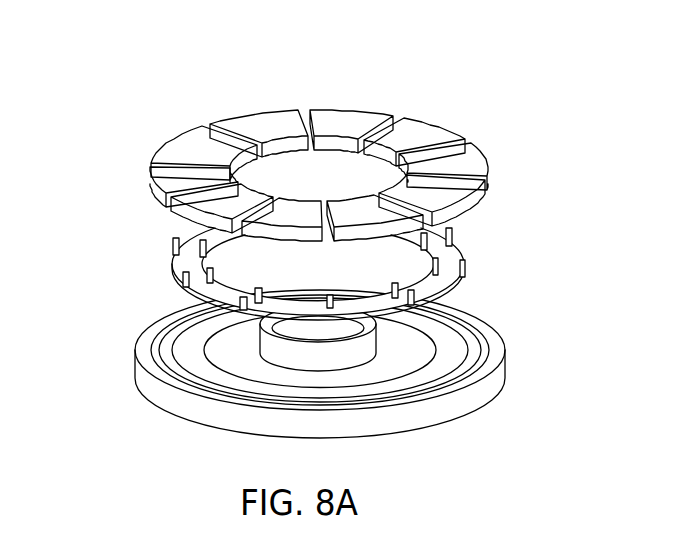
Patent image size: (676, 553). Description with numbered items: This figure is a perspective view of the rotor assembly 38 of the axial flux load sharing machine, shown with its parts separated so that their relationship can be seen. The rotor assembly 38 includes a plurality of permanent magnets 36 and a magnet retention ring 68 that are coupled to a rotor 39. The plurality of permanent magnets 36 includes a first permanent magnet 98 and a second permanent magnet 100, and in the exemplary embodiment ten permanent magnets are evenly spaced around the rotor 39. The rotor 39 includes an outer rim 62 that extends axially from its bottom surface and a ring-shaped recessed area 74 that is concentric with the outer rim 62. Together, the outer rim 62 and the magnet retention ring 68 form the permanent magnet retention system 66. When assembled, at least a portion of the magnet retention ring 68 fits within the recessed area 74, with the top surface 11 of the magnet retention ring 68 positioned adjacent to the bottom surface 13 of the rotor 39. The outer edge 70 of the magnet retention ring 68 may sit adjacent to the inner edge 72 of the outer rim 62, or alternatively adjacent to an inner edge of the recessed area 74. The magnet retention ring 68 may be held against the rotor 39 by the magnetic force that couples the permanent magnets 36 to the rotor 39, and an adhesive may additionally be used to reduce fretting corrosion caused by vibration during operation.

The top surface 11 is at (463, 283).
The bottom surface 13 is at (447, 362).
The permanent magnets 36 is at (448, 120).
The rotor assembly 38 is at (155, 422).
The rotor 39 is at (137, 358).
The outer rim 62 is at (495, 342).
The permanent magnet retention system 66 is at (240, 98).
The magnet retention ring 68 is at (463, 252).
The outer edge 70 is at (173, 263).
The inner edge 72 is at (183, 316).
The recessed area 74 is at (188, 343).
The first permanent magnet 98 is at (175, 145).
The second permanent magnet 100 is at (150, 182).